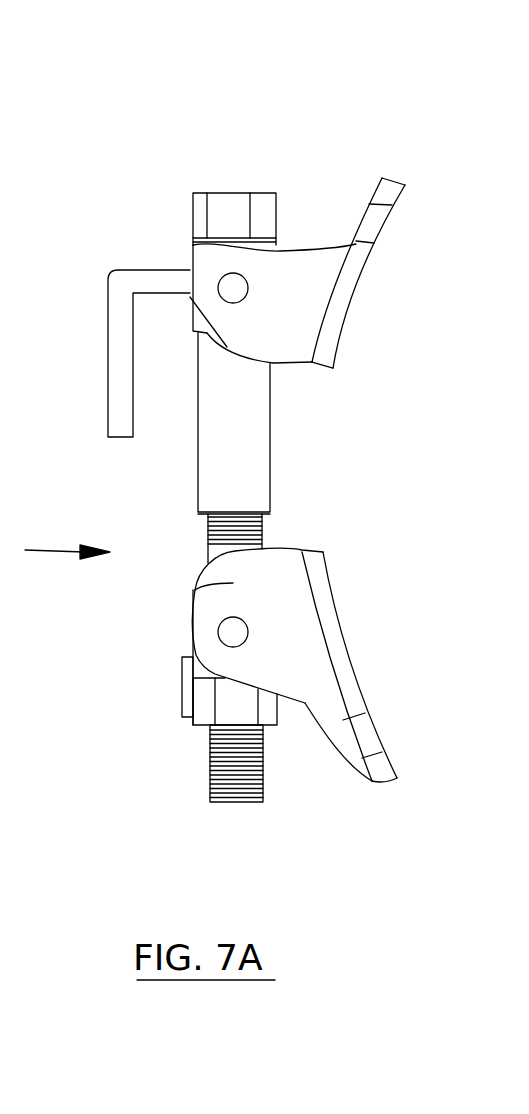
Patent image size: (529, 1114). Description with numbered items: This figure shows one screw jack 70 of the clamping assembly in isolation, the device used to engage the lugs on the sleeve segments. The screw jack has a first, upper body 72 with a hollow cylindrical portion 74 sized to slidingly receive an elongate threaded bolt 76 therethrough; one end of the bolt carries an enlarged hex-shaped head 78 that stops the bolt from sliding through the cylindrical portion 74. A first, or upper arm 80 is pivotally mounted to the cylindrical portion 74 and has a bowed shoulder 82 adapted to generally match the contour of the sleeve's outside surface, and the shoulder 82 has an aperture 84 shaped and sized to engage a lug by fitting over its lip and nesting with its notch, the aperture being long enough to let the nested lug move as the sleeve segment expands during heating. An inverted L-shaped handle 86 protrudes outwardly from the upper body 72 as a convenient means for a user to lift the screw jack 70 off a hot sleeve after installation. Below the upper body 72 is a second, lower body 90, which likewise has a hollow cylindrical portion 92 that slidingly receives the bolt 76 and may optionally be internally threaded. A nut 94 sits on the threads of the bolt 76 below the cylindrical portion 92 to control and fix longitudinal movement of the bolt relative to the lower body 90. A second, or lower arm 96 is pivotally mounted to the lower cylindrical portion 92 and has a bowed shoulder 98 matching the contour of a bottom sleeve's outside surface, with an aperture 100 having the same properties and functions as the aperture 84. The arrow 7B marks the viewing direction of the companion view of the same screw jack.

The screw jack 70 is at (263, 143).
The upper body 72 is at (280, 402).
The hollow cylindrical portion 74 is at (258, 455).
The elongate threaded bolt 76 is at (262, 533).
The hex-shaped head 78 is at (268, 202).
The upper arm 80 is at (295, 268).
The bowed shoulder 82 is at (387, 273).
The aperture 84 is at (378, 217).
The inverted L-shaped handle 86 is at (131, 270).
The view direction arrow 7B is at (67, 569).
The lower body 90 is at (150, 650).
The hollow cylindrical portion 92 is at (197, 665).
The nut 94 is at (200, 718).
The lower arm 96 is at (195, 585).
The bowed shoulder 98 is at (381, 667).
The aperture 100 is at (363, 733).